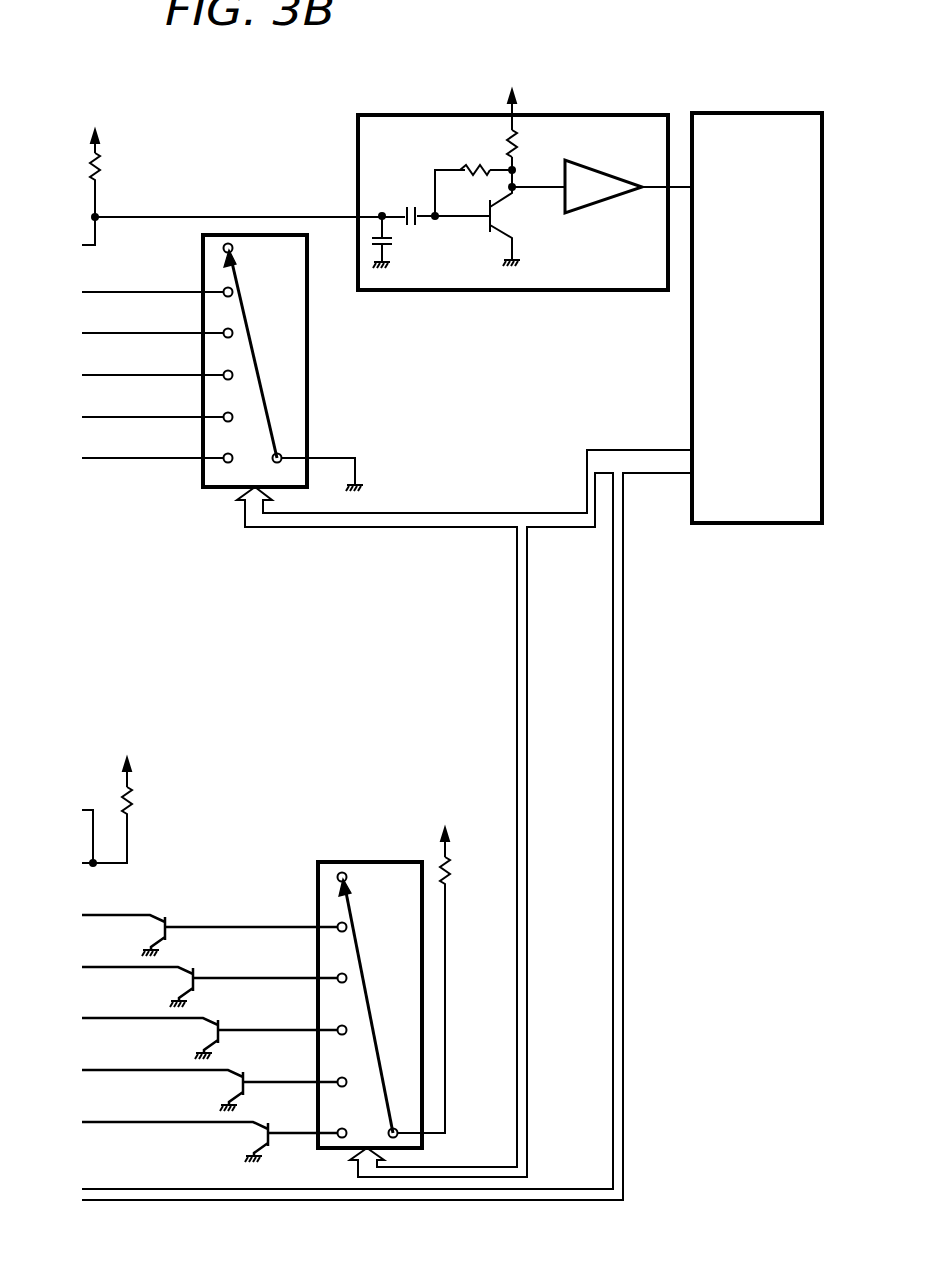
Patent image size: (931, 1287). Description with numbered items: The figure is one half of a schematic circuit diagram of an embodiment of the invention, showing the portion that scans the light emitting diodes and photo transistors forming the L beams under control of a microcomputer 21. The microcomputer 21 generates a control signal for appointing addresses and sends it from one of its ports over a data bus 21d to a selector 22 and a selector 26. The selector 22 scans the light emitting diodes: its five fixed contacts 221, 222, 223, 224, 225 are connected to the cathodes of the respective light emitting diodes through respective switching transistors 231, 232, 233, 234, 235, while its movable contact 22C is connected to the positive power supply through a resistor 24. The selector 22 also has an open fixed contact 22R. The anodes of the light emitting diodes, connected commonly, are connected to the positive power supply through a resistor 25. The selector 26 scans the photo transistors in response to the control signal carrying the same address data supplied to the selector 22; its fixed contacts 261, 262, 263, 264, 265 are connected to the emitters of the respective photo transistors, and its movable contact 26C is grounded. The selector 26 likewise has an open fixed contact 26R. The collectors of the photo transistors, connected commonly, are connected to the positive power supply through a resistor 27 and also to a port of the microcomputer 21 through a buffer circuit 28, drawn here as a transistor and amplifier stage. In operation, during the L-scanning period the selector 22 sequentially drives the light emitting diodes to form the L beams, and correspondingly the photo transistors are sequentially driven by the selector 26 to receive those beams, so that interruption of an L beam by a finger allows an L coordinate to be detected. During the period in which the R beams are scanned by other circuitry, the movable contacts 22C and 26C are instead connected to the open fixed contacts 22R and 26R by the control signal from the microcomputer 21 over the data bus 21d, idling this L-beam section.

The microcomputer 21 is at (770, 113).
The data bus 21d is at (433, 513).
The selector 22 is at (355, 862).
The open fixed contact 22R is at (347, 878).
The movable contact 22C is at (394, 1128).
The fixed contact 221 is at (343, 1128).
The fixed contact 222 is at (342, 1077).
The fixed contact 223 is at (342, 1025).
The fixed contact 224 is at (338, 977).
The fixed contact 225 is at (338, 926).
The switching transistor 231 is at (271, 1125).
The switching transistor 232 is at (247, 1074).
The switching transistor 233 is at (222, 1022).
The switching transistor 234 is at (196, 968).
The switching transistor 235 is at (169, 917).
The resistor 24 is at (453, 868).
The resistor 25 is at (136, 803).
The selector 26 is at (308, 396).
The open fixed contact 26R is at (233, 249).
The movable contact 26C is at (278, 453).
The fixed contact 261 is at (224, 457).
The fixed contact 262 is at (224, 416).
The fixed contact 263 is at (224, 374).
The fixed contact 264 is at (224, 332).
The fixed contact 265 is at (224, 291).
The resistor 27 is at (106, 170).
The buffer circuit 28 is at (523, 290).